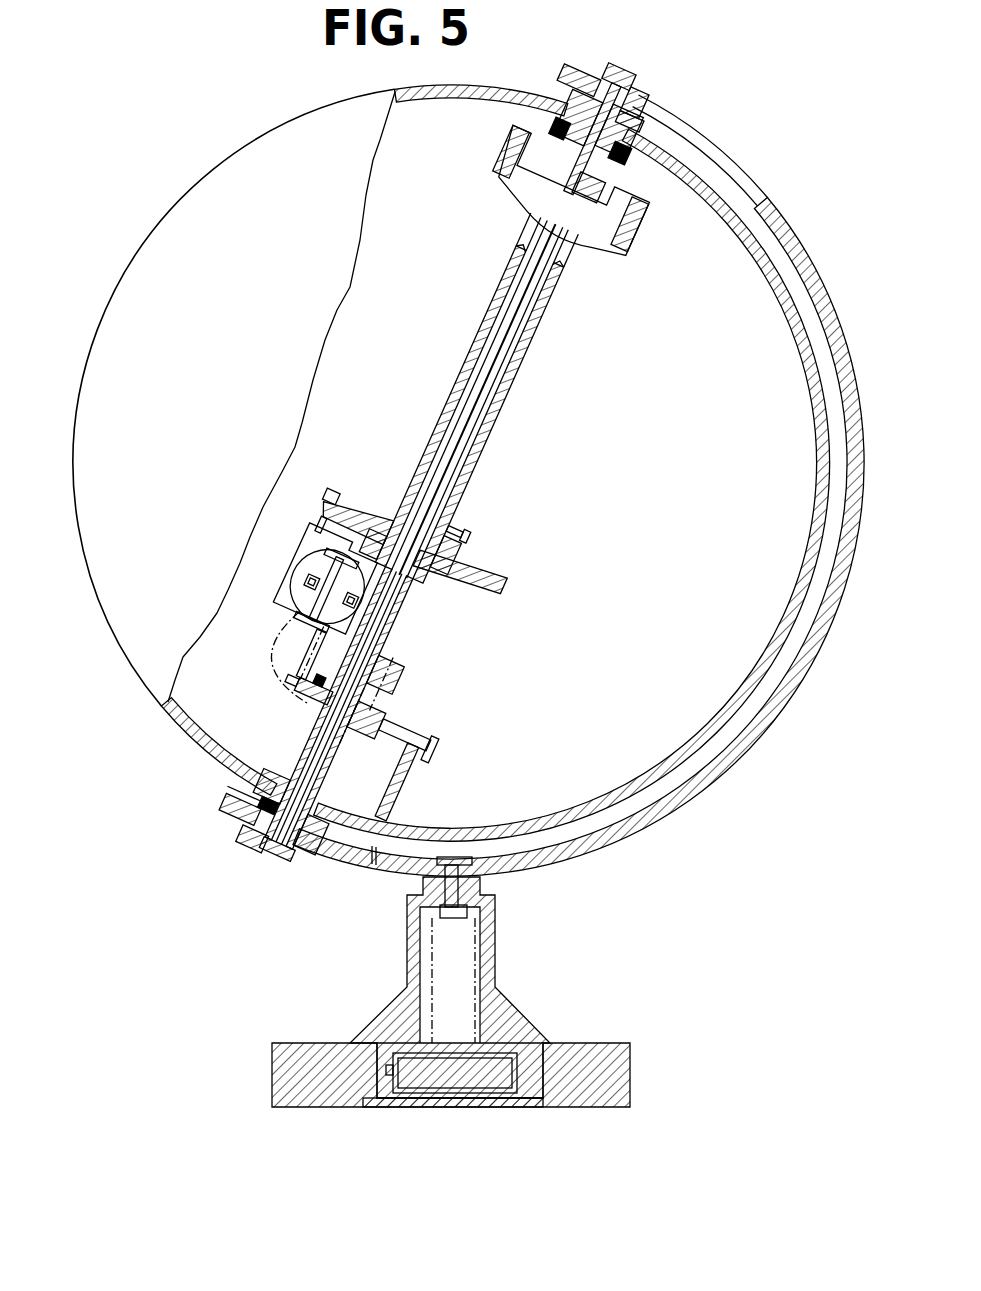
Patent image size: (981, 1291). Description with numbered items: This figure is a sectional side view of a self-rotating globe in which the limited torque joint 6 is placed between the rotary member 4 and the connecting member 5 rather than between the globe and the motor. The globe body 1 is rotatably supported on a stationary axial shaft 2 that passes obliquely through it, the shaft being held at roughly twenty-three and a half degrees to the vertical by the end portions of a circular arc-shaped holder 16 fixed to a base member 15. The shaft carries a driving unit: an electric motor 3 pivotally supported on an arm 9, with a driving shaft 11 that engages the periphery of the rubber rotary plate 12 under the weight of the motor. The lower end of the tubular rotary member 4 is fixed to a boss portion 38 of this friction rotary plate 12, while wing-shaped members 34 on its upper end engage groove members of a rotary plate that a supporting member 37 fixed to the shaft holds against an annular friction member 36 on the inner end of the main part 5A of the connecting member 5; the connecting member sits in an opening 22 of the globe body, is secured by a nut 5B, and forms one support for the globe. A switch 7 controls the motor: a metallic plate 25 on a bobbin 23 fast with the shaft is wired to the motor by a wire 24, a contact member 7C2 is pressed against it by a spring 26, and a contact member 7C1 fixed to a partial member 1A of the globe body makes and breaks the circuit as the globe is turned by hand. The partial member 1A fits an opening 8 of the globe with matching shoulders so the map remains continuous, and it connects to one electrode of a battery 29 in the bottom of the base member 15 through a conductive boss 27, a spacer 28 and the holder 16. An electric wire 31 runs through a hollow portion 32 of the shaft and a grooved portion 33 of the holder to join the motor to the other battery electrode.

The globe body 1 is at (805, 365).
The partial member 1A is at (238, 765).
The stationary axial shaft 2 is at (470, 400).
The electric motor 3 is at (300, 572).
The rotary member 4 is at (512, 388).
The connecting member 5 is at (642, 130).
The main part of connecting member 5A is at (637, 145).
The nut 5B is at (557, 106).
The limited torque joint 6 is at (546, 122).
The switch 7 is at (397, 705).
The contact member 7C1 is at (428, 762).
The contact member 7C2 is at (385, 730).
The opening 8 is at (236, 756).
The arm 9 is at (398, 603).
The driving shaft 11 is at (352, 495).
The rotary plate 12 is at (478, 570).
The base member 15 is at (302, 1045).
The holder 16 is at (848, 430).
The opening 22 is at (560, 108).
The bobbin 23 is at (380, 675).
The wire 24 is at (290, 636).
The metallic plate 25 is at (300, 690).
The spring 26 is at (395, 690).
The boss 27 is at (287, 765).
The spacer 28 is at (311, 860).
The battery 29 is at (447, 1078).
The electric wire 31 is at (430, 952).
The hollow portion 32 is at (276, 862).
The grooved portion 33 is at (375, 866).
The wing-shaped members 34 is at (516, 175).
The annular friction member 36 is at (636, 163).
The supporting member 37 is at (595, 222).
The boss portion 38 is at (405, 505).